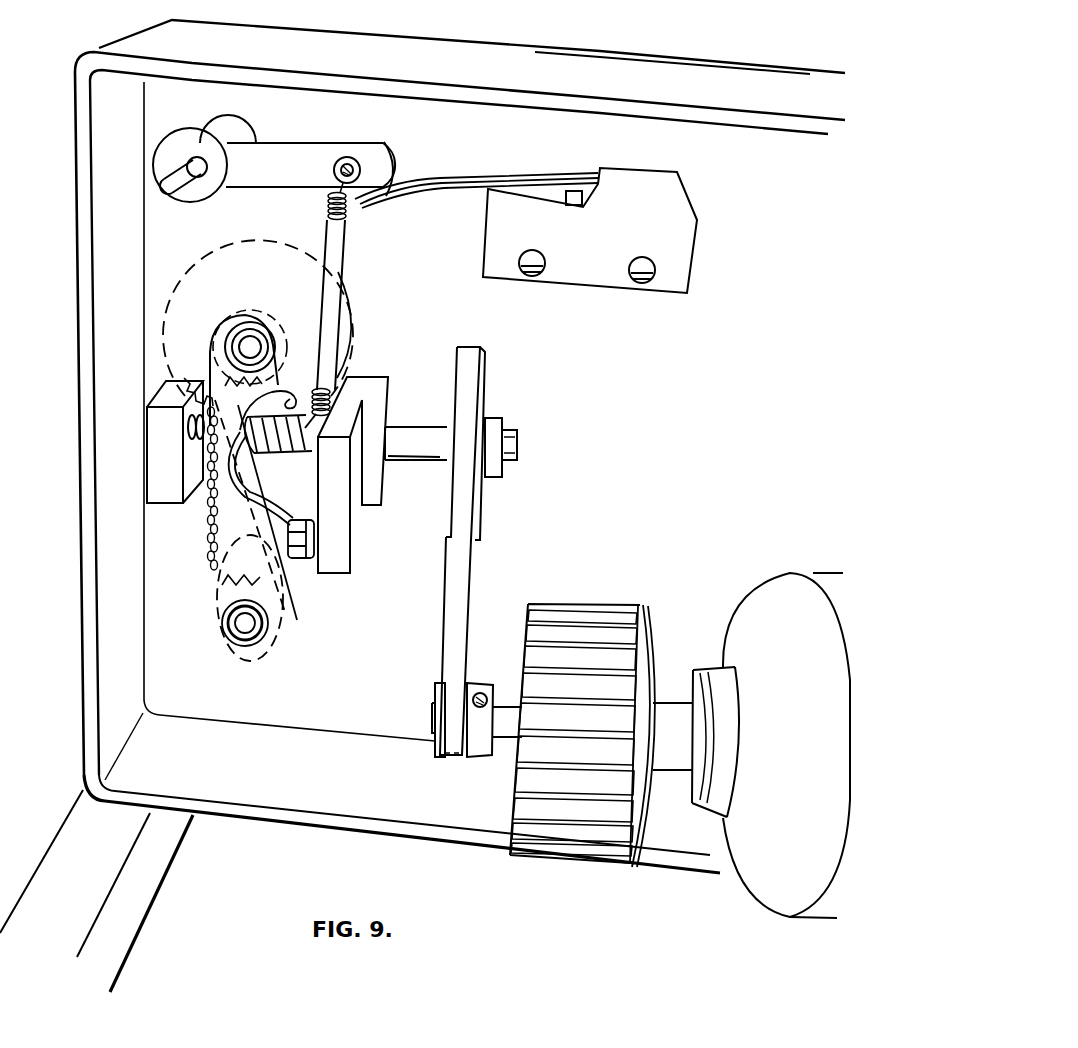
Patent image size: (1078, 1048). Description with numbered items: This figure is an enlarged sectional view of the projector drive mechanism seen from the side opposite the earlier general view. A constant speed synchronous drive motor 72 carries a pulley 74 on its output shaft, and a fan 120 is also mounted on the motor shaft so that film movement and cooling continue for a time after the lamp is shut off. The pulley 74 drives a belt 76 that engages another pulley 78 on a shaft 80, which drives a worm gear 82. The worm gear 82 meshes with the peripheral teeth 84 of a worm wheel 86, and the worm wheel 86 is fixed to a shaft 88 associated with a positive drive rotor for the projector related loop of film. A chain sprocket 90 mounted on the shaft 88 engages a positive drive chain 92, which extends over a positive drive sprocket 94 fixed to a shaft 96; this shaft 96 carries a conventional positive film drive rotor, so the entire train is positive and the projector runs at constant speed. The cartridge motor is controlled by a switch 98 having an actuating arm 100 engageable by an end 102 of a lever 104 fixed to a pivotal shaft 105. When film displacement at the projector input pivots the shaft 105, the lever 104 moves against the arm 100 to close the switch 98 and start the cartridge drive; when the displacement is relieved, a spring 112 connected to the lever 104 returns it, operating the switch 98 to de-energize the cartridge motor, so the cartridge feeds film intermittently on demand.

The synchronous drive motor 72 is at (743, 863).
The pulley 74 is at (473, 722).
The belt 76 is at (466, 647).
The pulley 78 is at (487, 373).
The shaft 80 is at (516, 438).
The worm gear 82 is at (297, 450).
The peripheral teeth 84 is at (310, 262).
The worm wheel 86 is at (226, 297).
The shaft 88 is at (240, 343).
The chain sprocket 90 is at (290, 340).
The positive drive chain 92 is at (203, 380).
The positive drive sprocket 94 is at (249, 563).
The shaft 96 is at (233, 623).
The switch 98 is at (600, 167).
The actuating arm 100 is at (430, 176).
The end of lever 102 is at (374, 162).
The lever 104 is at (290, 171).
The pivotal shaft 105 is at (188, 168).
The spring 112 is at (326, 220).
The fan 120 is at (584, 794).